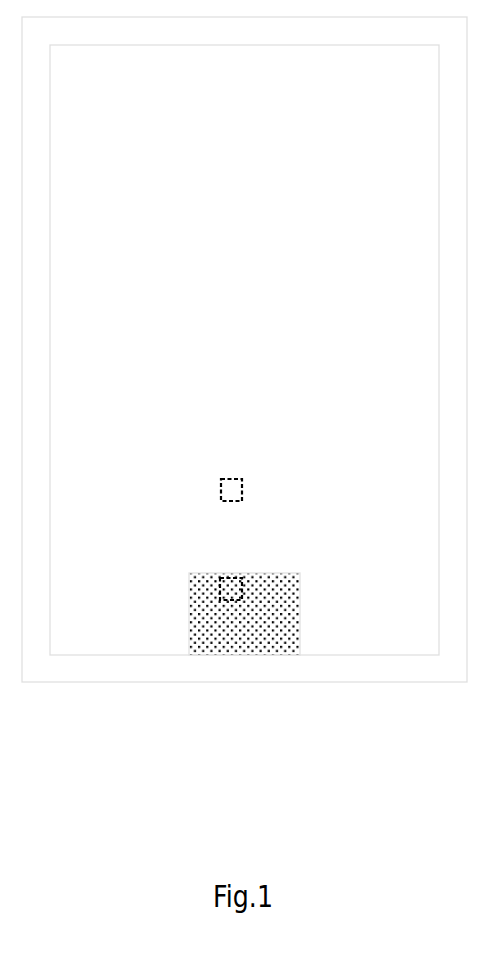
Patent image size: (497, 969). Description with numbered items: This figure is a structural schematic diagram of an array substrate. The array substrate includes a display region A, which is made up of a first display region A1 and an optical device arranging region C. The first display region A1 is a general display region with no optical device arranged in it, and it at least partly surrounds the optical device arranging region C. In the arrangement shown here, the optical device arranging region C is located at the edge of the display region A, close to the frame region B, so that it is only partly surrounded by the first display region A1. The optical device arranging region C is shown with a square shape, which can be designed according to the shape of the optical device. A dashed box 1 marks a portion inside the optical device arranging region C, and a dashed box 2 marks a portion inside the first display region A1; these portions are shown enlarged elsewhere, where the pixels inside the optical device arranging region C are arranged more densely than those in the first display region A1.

The dashed box 1 is at (220, 585).
The dashed box 2 is at (239, 479).
The display region A is at (244, 444).
The first display region A1 is at (115, 628).
The frame region B is at (395, 672).
The optical device arranging region C is at (250, 643).